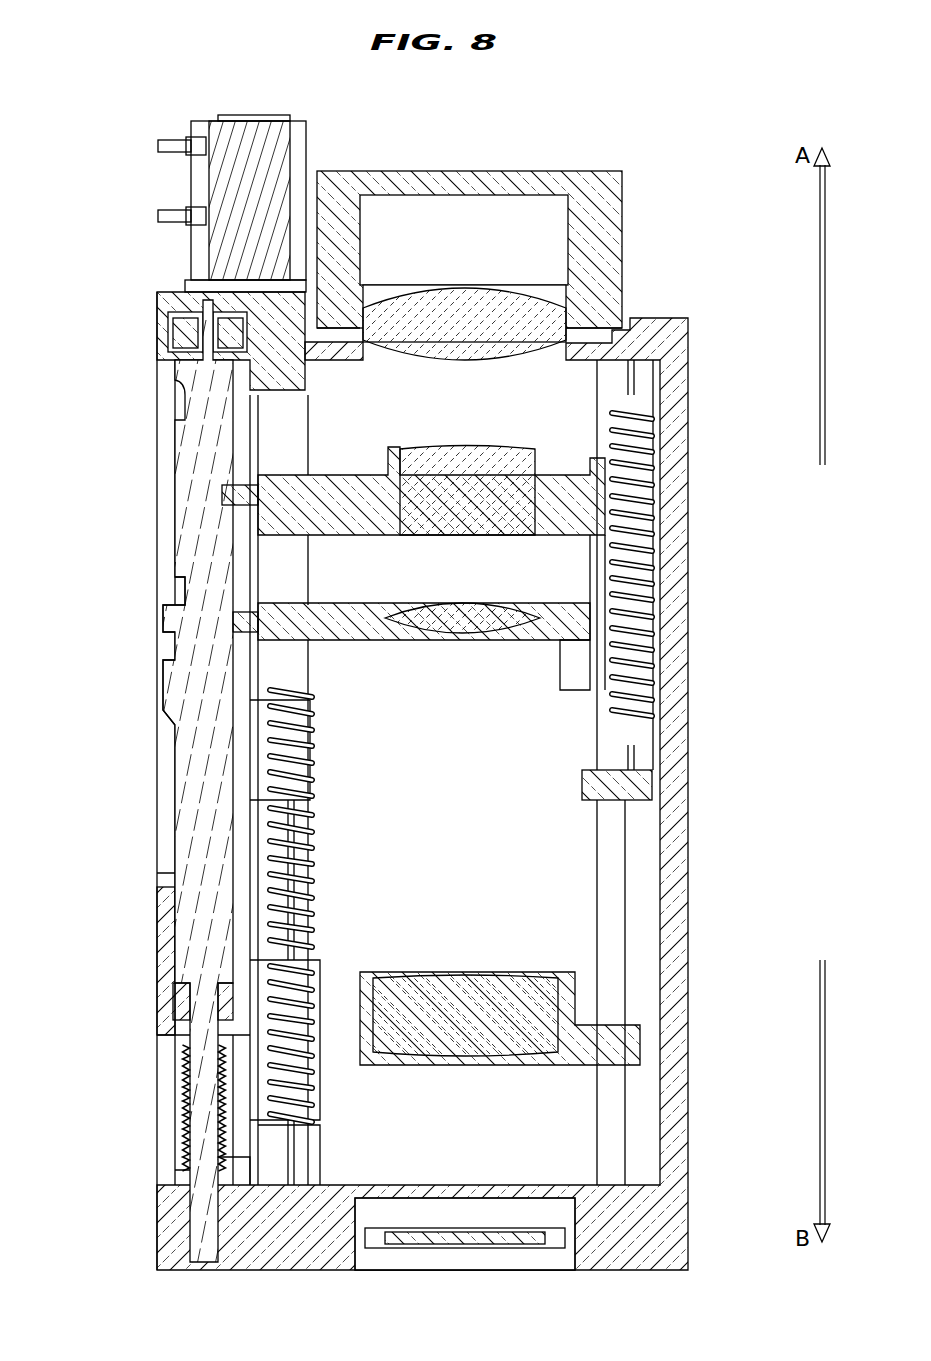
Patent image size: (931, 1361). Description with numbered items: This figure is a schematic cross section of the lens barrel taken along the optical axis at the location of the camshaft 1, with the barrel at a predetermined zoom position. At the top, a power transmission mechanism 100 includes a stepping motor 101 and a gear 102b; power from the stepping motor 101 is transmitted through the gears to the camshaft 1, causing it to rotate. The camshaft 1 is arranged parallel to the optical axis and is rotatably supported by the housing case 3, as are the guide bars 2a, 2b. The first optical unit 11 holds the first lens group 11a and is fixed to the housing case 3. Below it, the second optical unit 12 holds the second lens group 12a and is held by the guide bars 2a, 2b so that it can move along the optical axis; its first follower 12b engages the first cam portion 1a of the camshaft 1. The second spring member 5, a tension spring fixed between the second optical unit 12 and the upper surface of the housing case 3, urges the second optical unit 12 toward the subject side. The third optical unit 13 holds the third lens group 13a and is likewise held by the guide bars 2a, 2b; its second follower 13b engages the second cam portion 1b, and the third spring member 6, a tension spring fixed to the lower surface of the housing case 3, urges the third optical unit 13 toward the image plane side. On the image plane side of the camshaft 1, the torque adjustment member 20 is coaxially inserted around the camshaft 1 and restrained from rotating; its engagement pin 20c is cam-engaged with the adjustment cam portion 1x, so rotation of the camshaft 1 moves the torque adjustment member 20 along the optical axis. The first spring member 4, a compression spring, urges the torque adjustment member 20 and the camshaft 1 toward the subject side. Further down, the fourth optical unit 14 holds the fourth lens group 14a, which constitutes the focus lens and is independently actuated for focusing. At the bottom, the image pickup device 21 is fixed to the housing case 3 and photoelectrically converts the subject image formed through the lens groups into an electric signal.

The power transmission mechanism 100 is at (128, 240).
The stepping motor 101 is at (215, 180).
The gear 102b is at (185, 330).
The first optical unit 11 is at (598, 172).
The first lens group 11a is at (480, 300).
The housing case 3 is at (676, 325).
The second optical unit 12 is at (563, 516).
The second lens group 12a is at (470, 455).
The first follower 12b is at (230, 492).
The second spring member 5 is at (650, 432).
The third optical unit 13 is at (578, 626).
The third lens group 13a is at (505, 612).
The second follower 13b is at (248, 626).
The camshaft 1 is at (192, 822).
The first cam portion 1a is at (182, 590).
The second cam portion 1b is at (172, 630).
The adjustment cam portion 1x is at (172, 705).
The torque adjustment member 20 is at (175, 965).
The engagement pin 20c is at (248, 770).
The third spring member 6 is at (270, 900).
The first spring member 4 is at (190, 1080).
The guide bar 2b is at (272, 1135).
The fourth optical unit 14 is at (628, 1048).
The fourth lens group 14a is at (525, 998).
The guide bar 2a is at (612, 1128).
The image pickup device 21 is at (492, 1246).